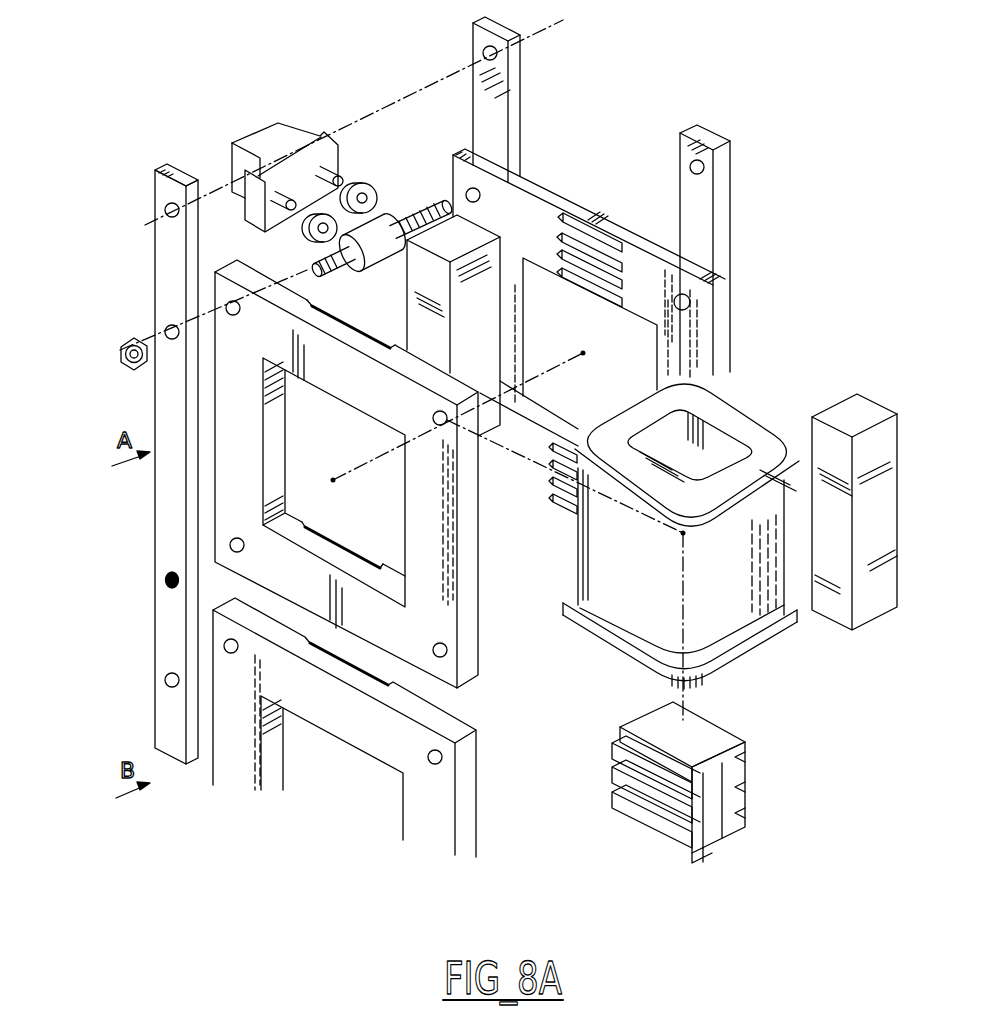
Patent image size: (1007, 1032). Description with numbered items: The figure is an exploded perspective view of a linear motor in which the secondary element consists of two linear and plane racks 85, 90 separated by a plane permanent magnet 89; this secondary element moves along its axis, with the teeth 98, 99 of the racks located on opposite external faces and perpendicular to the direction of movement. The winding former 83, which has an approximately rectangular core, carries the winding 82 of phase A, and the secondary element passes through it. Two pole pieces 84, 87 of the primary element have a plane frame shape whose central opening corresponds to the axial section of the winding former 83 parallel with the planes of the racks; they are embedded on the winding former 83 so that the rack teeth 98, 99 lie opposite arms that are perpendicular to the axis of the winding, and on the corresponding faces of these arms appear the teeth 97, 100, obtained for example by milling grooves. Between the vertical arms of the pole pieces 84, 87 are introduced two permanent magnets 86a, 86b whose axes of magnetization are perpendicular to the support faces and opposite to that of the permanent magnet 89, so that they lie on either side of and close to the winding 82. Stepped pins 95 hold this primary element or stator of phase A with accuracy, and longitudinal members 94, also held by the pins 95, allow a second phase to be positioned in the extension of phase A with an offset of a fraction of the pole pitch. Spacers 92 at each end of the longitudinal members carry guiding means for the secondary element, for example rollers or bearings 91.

The winding 82 is at (765, 545).
The winding former 83 is at (673, 667).
The pole piece 84 is at (545, 188).
The rack 85 is at (708, 728).
The permanent magnet 86a is at (852, 408).
The permanent magnet 86b is at (481, 238).
The pole piece 87 is at (467, 630).
The plane permanent magnet 89 is at (720, 740).
The rack 90 is at (683, 807).
The rollers or bearings 91 is at (366, 183).
The spacer 92 is at (274, 135).
The longitudinal member 94 is at (178, 165).
The stepped pin 95 is at (380, 235).
The teeth 97 is at (594, 245).
The teeth 98 is at (753, 773).
The teeth 99 is at (688, 815).
The teeth 100 is at (356, 555).